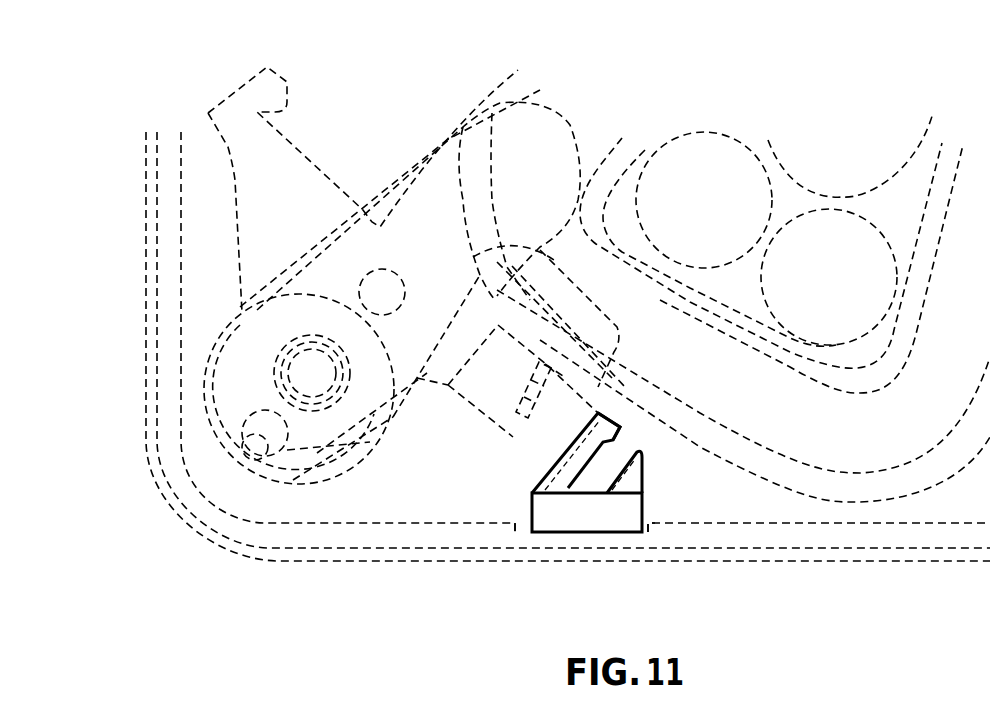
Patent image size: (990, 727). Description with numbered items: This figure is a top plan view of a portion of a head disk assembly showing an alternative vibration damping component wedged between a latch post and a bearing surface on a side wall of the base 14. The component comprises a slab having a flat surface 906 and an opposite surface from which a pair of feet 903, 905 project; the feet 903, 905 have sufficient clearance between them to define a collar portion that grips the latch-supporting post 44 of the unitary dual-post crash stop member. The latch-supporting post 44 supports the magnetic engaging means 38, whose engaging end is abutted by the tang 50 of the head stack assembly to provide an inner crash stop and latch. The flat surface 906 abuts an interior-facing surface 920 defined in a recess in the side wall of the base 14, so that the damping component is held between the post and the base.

The base 14 is at (860, 537).
The magnetic engaging means 38 is at (528, 433).
The latch-supporting post 44 is at (620, 450).
The tang 50 is at (540, 380).
The foot 903 is at (635, 480).
The foot 905 is at (543, 478).
The flat surface 906 is at (600, 532).
The interior-facing surface 920 is at (648, 530).